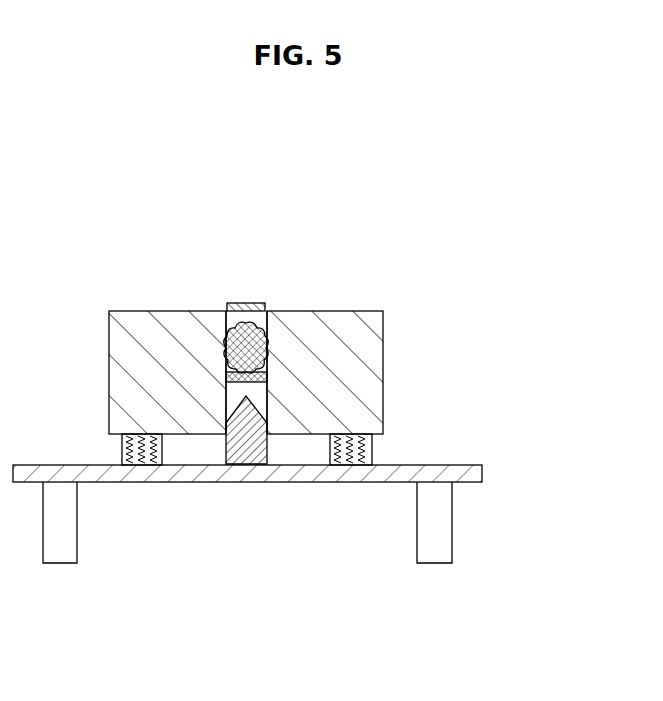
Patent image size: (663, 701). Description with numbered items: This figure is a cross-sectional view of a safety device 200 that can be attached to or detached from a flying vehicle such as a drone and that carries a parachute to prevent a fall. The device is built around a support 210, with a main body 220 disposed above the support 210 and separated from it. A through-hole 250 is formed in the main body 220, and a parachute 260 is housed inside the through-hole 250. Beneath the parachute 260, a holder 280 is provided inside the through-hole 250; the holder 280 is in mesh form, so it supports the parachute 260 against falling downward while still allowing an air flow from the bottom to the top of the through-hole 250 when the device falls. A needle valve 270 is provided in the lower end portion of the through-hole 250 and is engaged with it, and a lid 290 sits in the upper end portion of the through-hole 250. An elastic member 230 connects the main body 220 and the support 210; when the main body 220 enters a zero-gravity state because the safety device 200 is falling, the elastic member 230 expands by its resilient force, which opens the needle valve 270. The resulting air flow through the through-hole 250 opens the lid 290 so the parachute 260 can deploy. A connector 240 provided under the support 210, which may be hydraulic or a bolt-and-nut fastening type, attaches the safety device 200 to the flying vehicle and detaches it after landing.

The safety device 200 is at (268, 148).
The support 210 is at (478, 472).
The main body 220 is at (358, 327).
The elastic member 230 is at (350, 458).
The connector 240 is at (67, 543).
The through-hole 250 is at (260, 399).
The parachute 260 is at (248, 329).
The needle valve 270 is at (245, 458).
The holder 280 is at (226, 376).
The lid 290 is at (247, 302).